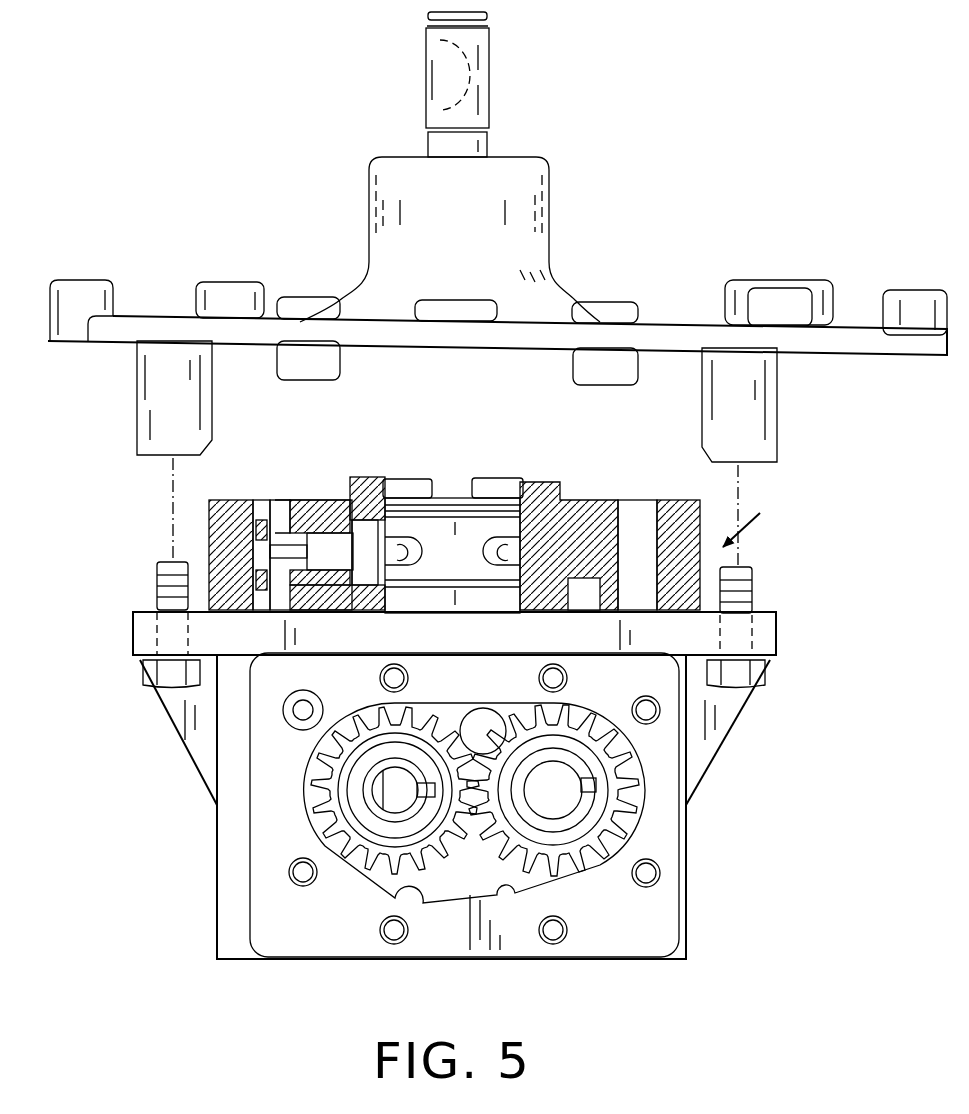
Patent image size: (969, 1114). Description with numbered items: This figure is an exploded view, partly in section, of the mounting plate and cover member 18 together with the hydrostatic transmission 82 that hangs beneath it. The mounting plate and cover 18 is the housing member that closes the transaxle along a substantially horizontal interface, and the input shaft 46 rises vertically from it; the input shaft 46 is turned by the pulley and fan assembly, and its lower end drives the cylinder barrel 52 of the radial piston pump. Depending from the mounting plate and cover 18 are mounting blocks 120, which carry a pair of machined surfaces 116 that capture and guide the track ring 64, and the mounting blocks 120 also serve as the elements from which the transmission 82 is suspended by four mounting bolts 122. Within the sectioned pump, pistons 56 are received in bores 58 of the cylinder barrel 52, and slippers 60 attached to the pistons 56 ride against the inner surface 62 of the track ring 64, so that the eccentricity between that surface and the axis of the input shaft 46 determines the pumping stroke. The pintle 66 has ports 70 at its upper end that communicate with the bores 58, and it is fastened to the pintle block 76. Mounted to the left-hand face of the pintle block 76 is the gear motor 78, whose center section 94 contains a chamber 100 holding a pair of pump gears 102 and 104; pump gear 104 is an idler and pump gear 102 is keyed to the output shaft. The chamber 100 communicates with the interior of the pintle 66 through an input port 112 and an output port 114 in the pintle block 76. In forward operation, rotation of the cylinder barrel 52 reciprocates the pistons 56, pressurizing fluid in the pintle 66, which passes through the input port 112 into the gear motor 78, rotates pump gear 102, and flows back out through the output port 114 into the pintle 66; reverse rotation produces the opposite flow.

The mounting plate and cover member 18 is at (550, 246).
The input shaft 46 is at (489, 75).
The cylinder barrel 52 is at (364, 490).
The pistons 56 is at (288, 525).
The bores 58 is at (325, 495).
The slippers 60 is at (272, 525).
The inner surface 62 is at (655, 528).
The track ring 64 is at (212, 512).
The pintle 66 is at (452, 540).
The ports 70 is at (398, 540).
The pintle block 76 is at (688, 832).
The gear motor 78 is at (300, 818).
The hydrostatic transmission 82 is at (759, 521).
The center section 94 is at (655, 910).
The chamber 100 is at (515, 895).
The pump gear 102 is at (633, 778).
The pump gear 104 is at (370, 862).
The input port 112 is at (480, 708).
The output port 114 is at (423, 905).
The machined surfaces 116 is at (212, 405).
The mounting blocks 120 is at (137, 406).
The mounting bolts 122 is at (158, 582).